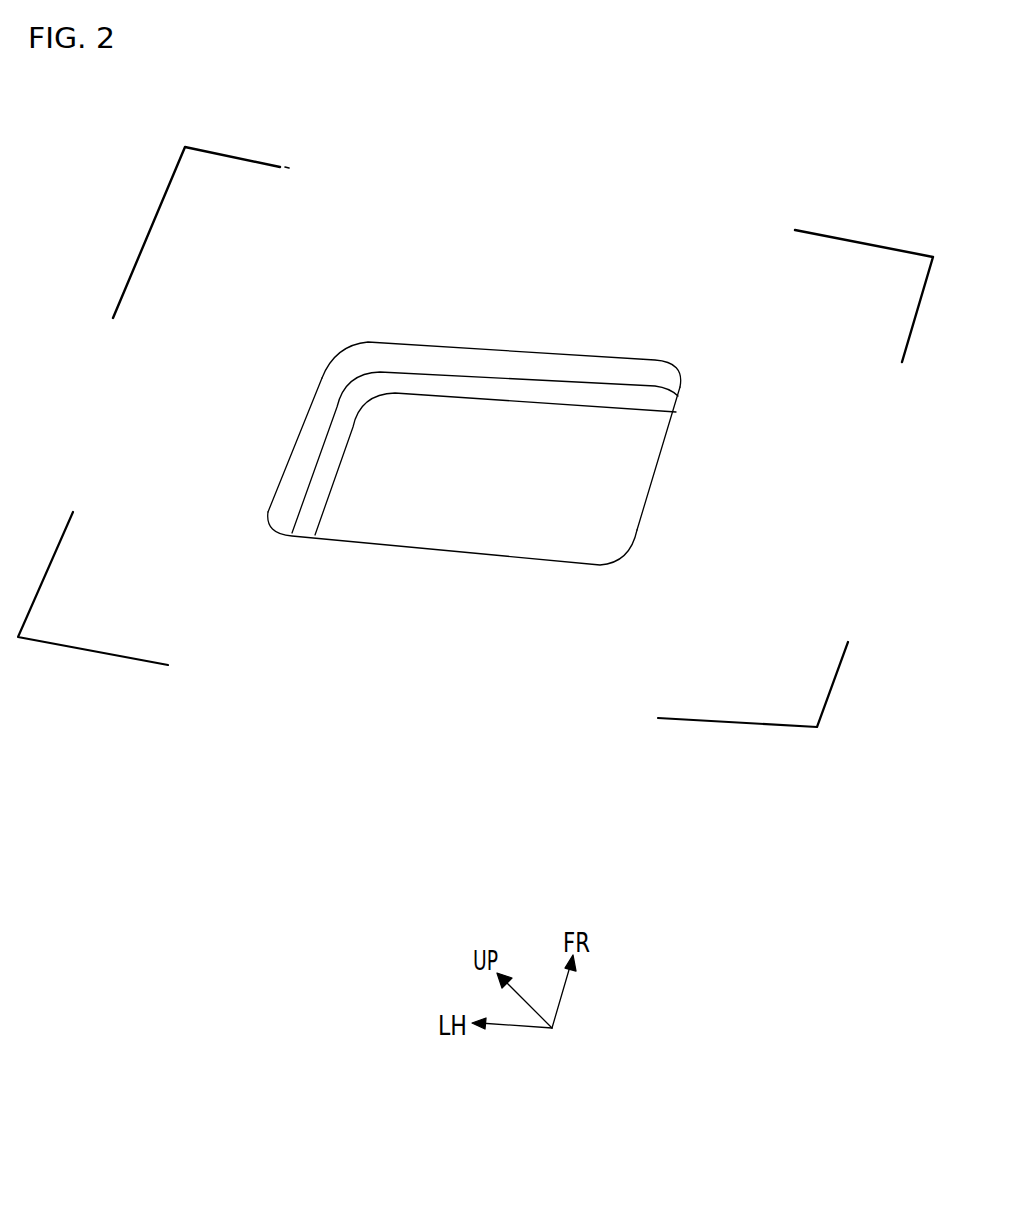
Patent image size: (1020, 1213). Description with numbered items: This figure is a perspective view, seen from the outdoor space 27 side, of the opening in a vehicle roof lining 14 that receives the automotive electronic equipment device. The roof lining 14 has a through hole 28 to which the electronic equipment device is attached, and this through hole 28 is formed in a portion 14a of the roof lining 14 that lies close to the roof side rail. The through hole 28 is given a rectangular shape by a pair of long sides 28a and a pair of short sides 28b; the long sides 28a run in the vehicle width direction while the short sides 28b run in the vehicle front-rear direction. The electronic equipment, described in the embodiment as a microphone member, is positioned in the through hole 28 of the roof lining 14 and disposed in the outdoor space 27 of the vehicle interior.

The roof lining 14 is at (862, 397).
The portion of the roof lining 14a is at (398, 277).
The outdoor space 27 is at (509, 202).
The through hole 28 is at (570, 351).
The long sides 28a is at (483, 347).
The short sides 28b is at (300, 423).